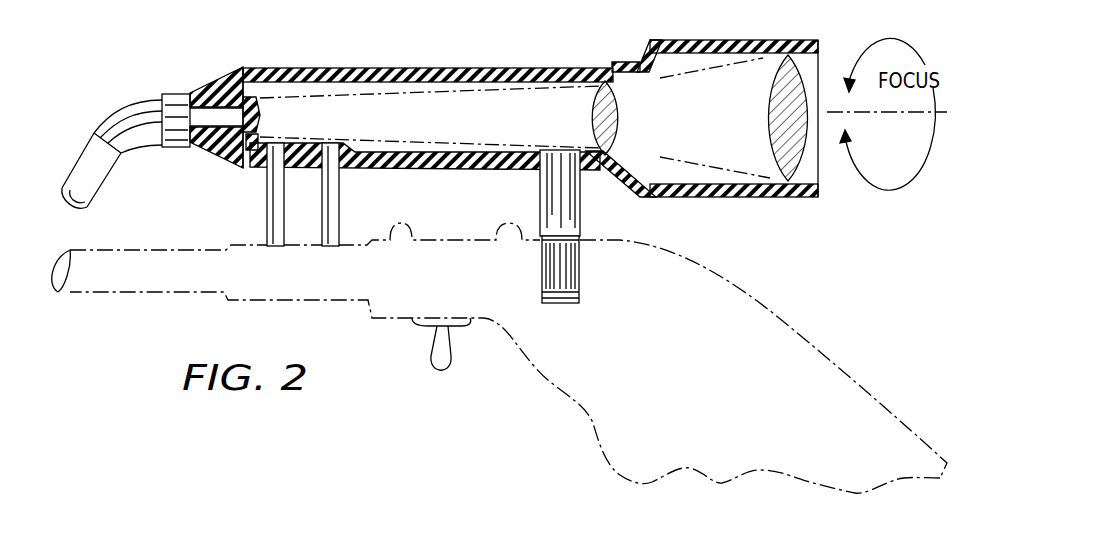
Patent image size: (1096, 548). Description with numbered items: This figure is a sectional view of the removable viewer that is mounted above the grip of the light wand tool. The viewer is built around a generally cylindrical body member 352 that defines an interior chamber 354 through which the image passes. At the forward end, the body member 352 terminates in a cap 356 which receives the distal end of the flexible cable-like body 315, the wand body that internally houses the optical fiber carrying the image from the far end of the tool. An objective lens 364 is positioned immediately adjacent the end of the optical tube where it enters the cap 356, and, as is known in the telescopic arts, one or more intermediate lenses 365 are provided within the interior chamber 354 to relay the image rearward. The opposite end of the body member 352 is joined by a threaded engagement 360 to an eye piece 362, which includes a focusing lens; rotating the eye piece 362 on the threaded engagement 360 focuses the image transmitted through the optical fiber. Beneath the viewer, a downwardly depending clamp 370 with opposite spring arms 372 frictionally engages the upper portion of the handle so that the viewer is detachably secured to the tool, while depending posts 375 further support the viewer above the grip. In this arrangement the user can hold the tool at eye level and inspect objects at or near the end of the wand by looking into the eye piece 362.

The cable-like body 315 is at (83, 158).
The body member 352 is at (487, 36).
The interior chamber 354 is at (468, 125).
The cap 356 is at (197, 93).
The threaded engagement 360 is at (638, 66).
The eye piece 362 is at (733, 20).
The objective lens 364 is at (230, 128).
The intermediate lenses 365 is at (619, 172).
The clamp 370 is at (539, 194).
The spring arms 372 is at (580, 281).
The depending posts 375 is at (338, 190).